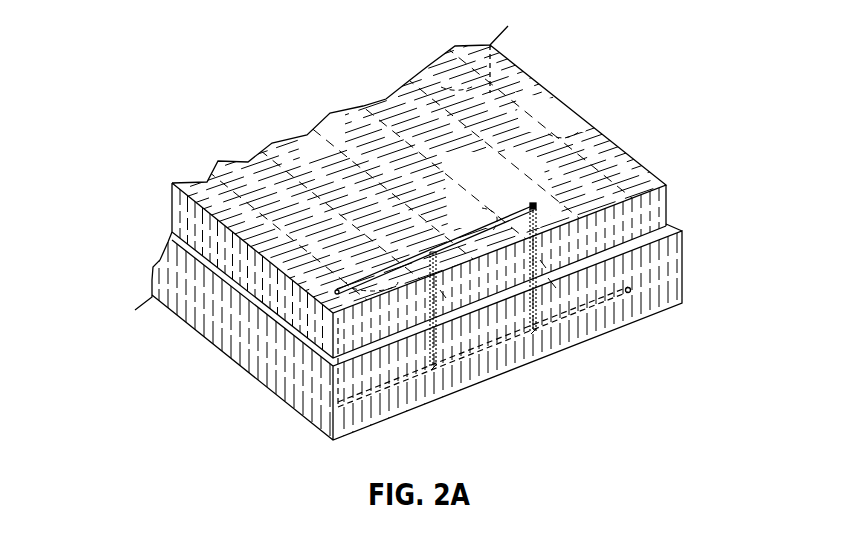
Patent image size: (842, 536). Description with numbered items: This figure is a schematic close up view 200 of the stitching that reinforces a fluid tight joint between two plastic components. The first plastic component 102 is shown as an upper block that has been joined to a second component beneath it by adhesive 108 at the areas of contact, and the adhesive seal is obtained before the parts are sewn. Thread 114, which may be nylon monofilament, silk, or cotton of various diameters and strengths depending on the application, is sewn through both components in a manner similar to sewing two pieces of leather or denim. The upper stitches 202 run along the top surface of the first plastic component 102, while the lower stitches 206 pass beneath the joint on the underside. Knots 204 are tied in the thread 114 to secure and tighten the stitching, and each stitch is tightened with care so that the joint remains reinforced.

The close up view 200 is at (396, 220).
The first plastic component 102 is at (516, 96).
The adhesive 108 is at (200, 229).
The thread 114 is at (600, 333).
The upper stitches 202 is at (387, 272).
The knots 204 is at (440, 382).
The lower stitches 206 is at (540, 209).